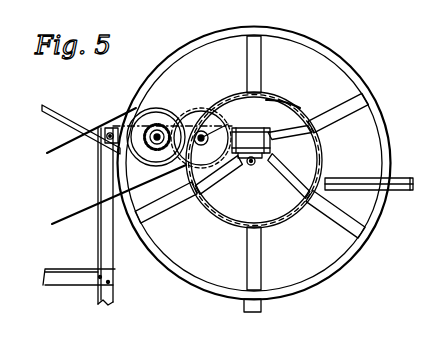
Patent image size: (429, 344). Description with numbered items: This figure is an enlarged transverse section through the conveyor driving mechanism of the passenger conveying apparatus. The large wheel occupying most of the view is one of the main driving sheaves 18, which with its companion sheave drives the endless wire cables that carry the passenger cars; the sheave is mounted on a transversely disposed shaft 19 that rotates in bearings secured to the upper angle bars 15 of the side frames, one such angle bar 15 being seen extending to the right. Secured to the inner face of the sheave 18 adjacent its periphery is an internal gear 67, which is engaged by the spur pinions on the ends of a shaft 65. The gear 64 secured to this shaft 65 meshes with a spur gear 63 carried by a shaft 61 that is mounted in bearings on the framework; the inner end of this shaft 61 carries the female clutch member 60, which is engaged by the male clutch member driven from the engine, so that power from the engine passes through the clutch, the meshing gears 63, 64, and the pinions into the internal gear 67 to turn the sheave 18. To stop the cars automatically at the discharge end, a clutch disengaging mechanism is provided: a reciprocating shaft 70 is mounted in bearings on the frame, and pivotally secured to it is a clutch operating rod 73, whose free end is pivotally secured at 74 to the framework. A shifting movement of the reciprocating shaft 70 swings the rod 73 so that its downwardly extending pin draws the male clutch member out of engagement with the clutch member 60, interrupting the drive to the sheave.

The upper angle bar 15 is at (411, 176).
The main driving sheave 18 is at (383, 113).
The transversely disposed shaft 19 is at (240, 186).
The female clutch member 60 is at (99, 158).
The shaft 61 is at (162, 131).
The spur gear 63 is at (138, 111).
The gear 64 is at (197, 107).
The shaft 65 is at (220, 121).
The internal gear 67 is at (270, 99).
The reciprocating shaft 70 is at (99, 139).
The clutch operating rod 73 is at (112, 122).
The pivot 74 is at (272, 144).